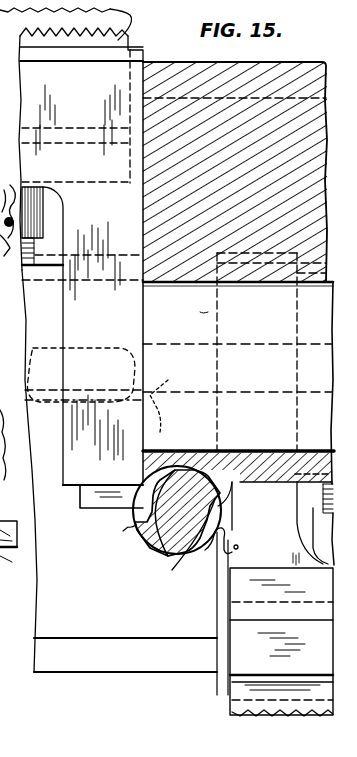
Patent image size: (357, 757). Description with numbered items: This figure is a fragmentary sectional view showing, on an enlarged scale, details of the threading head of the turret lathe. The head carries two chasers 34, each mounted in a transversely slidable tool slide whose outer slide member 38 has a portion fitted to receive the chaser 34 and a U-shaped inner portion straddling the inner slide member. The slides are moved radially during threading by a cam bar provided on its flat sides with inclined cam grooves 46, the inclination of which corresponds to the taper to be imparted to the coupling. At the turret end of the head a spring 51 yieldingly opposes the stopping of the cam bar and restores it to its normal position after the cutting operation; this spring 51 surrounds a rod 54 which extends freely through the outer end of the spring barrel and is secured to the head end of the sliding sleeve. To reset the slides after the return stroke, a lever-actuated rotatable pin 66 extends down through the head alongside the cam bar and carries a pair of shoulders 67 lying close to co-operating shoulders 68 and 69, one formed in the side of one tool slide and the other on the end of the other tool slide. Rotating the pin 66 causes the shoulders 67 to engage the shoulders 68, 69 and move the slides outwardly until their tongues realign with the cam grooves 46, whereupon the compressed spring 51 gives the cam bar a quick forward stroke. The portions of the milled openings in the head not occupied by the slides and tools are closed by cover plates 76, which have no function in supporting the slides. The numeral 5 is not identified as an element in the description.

The chaser 34 is at (235, 720).
The spring 51 is at (22, 128).
The rod 54 is at (21, 225).
The outer slide member 38 is at (297, 527).
The cam groove 46 is at (24, 362).
The conduit 5 is at (167, 422).
The rotatable pin 66 is at (183, 540).
The shoulder 67 is at (136, 524).
The shoulder 68 is at (221, 611).
The shoulder 69 is at (135, 518).
The cover plate 76 is at (108, 658).